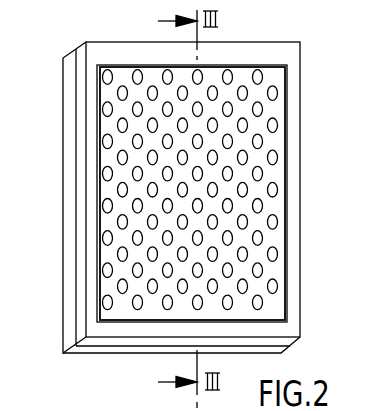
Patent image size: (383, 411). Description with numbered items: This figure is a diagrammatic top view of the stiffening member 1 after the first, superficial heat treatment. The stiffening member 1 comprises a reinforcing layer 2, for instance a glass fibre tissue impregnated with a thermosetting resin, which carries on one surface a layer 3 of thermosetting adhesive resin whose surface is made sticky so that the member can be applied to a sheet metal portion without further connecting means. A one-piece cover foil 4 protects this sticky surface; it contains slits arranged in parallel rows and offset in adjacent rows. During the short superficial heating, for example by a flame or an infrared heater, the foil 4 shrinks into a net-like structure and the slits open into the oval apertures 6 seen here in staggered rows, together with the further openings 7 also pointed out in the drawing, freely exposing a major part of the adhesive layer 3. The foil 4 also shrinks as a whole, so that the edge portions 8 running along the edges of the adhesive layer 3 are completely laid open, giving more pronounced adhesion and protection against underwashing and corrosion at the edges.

The stiffening member 1 is at (316, 58).
The reinforcing layer 2 is at (72, 280).
The adhesive layer 3 is at (82, 323).
The cover foil 4 is at (98, 167).
The oval apertures 6 is at (262, 117).
The perforation holes 7 is at (137, 90).
The edge portions 8 is at (247, 53).